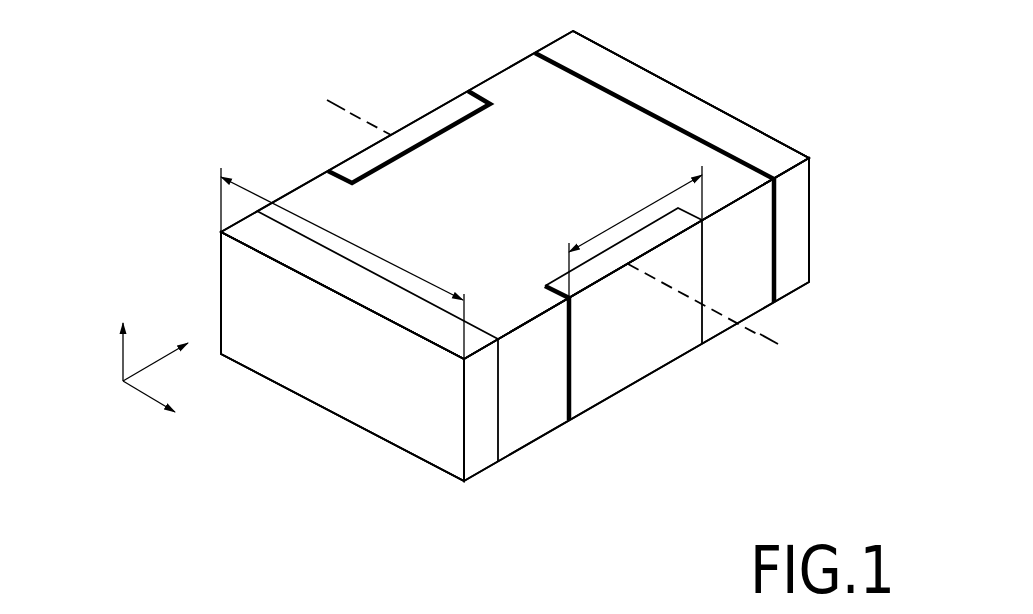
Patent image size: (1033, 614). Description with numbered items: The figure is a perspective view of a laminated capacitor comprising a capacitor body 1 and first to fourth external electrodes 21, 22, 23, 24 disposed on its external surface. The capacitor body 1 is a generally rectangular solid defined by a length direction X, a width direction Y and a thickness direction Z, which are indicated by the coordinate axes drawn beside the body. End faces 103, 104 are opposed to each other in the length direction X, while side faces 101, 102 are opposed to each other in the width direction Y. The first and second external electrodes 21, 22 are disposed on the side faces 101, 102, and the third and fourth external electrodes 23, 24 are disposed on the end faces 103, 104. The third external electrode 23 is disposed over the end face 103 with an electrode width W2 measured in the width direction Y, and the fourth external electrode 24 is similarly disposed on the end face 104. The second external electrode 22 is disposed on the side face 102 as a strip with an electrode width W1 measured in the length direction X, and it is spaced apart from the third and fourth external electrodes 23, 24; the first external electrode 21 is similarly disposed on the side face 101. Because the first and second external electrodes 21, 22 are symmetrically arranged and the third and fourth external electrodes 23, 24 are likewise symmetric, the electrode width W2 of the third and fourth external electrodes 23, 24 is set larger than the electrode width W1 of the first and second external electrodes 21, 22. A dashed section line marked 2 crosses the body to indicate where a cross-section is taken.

The capacitor body 1 is at (298, 198).
The section line 2 is at (342, 112).
The first external electrode 21 is at (433, 120).
The second external electrode 22 is at (637, 340).
The third external electrode 23 is at (365, 407).
The fourth external electrode 24 is at (637, 77).
The side face 101 is at (482, 55).
The side face 102 is at (738, 282).
The end face 103 is at (308, 370).
The end face 104 is at (760, 110).
The electrode width W1 is at (633, 213).
The electrode width W2 is at (363, 250).
The length direction X is at (155, 365).
The width direction Y is at (140, 400).
The thickness direction Z is at (120, 352).